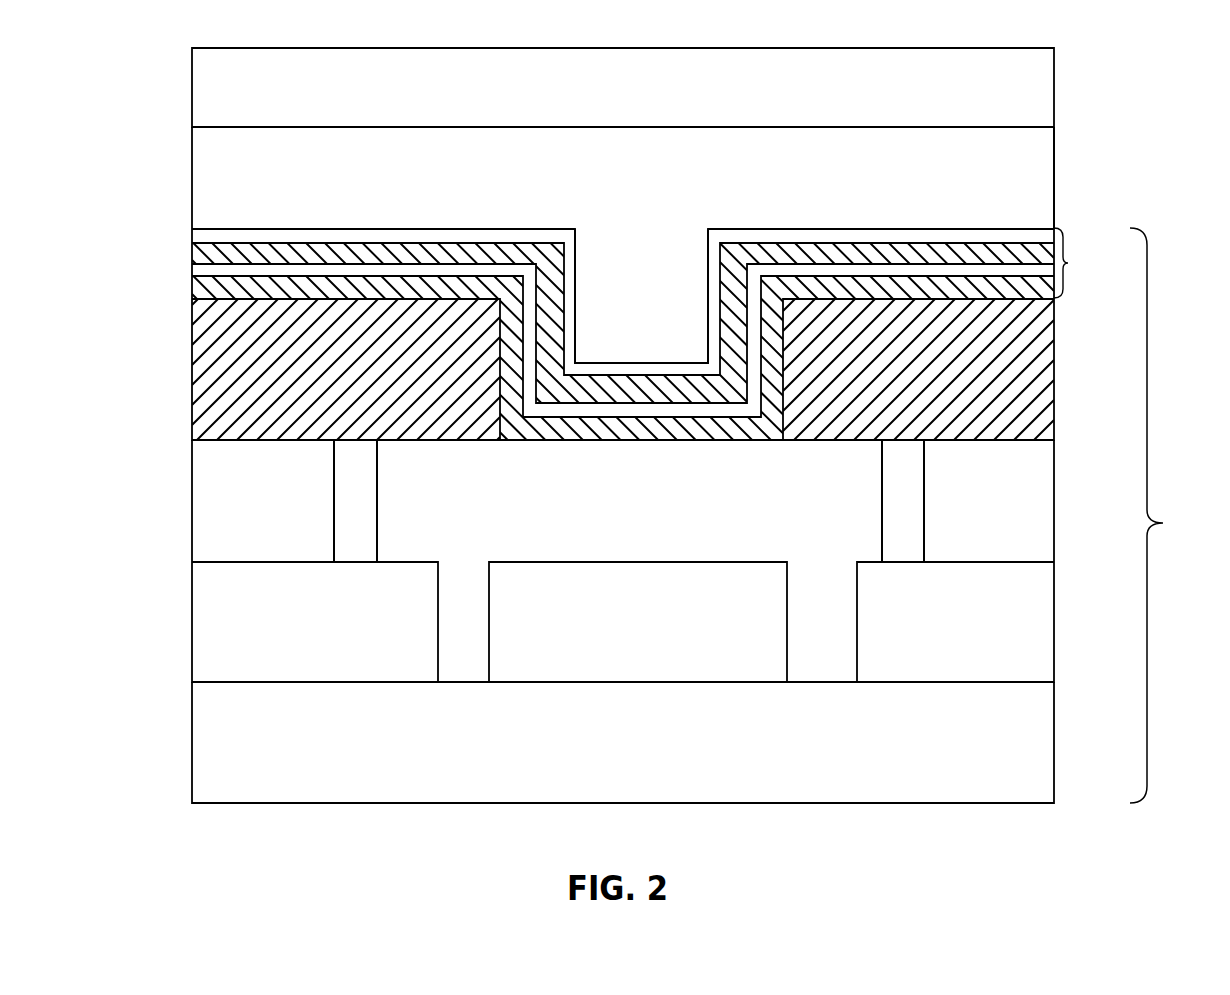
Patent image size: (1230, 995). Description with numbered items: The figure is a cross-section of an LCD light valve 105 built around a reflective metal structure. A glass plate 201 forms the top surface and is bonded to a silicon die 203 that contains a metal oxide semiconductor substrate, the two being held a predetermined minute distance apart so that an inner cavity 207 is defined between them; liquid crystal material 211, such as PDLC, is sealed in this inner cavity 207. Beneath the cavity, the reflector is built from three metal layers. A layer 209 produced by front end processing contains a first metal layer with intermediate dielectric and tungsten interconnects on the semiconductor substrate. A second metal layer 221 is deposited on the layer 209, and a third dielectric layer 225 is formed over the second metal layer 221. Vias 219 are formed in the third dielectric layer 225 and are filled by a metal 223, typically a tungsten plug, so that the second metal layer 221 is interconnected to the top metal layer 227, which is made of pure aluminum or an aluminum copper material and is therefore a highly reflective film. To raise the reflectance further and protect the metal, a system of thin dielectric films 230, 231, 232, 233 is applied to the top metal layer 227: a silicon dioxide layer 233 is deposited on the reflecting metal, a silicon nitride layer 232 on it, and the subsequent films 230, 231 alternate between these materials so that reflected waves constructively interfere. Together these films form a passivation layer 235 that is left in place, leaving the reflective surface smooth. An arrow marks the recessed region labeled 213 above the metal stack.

The light valve 105 is at (768, 847).
The glass plate 201 is at (1053, 92).
The silicon die 203 is at (1169, 515).
The inner cavity 207 is at (1052, 160).
The layer formed by front end processing 209 is at (199, 730).
The liquid crystal material 211 is at (1042, 195).
The trench 213 is at (633, 298).
The vias 219 is at (370, 490).
The second metal layer 221 is at (199, 615).
The metal plug 223 is at (370, 518).
The third dielectric layer 225 is at (199, 498).
The top metal layer 227 is at (197, 393).
The thin film 230 is at (190, 235).
The thin film 231 is at (190, 253).
The silicon nitride layer 232 is at (190, 270).
The silicon dioxide dielectric material 233 is at (190, 288).
The passivation layer 235 is at (1068, 263).